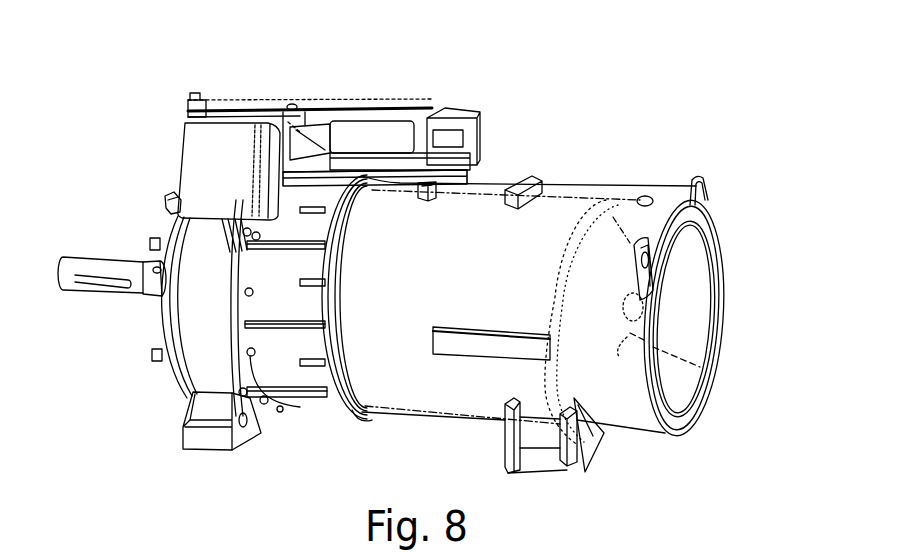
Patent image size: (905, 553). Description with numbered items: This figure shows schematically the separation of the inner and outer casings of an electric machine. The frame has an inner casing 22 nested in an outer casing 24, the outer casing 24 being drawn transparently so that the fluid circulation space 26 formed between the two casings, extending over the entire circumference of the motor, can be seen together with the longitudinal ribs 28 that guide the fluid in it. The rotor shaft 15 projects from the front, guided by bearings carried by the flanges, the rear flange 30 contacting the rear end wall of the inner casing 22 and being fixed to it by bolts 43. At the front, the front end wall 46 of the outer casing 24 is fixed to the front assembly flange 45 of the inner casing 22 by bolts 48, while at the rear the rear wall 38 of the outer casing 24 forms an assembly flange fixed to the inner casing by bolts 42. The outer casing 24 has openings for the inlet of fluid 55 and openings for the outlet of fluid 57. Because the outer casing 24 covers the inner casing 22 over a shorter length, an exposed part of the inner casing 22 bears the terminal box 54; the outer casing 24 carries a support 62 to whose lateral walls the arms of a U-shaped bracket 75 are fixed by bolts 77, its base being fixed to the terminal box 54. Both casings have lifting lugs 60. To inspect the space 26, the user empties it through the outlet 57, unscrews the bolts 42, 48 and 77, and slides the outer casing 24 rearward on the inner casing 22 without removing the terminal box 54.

The shaft 15 is at (80, 289).
The inner casing 22 is at (310, 397).
The outer casing 24 is at (668, 202).
The fluid circulation space 26 is at (230, 353).
The longitudinal ribs 28 is at (300, 407).
The rear flange 30 is at (715, 372).
The rear wall 38 is at (723, 292).
The bolts 42 is at (598, 407).
The bolts 43 is at (573, 403).
The front assembly flange 45 is at (227, 305).
The front end wall 46 is at (368, 421).
The bolts 48 is at (233, 377).
The terminal box 54 is at (455, 113).
The openings for the inlet of fluid 55 is at (645, 196).
The openings for the outlet of fluid 57 is at (650, 427).
The lifting lugs 60 is at (220, 237).
The support 62 is at (540, 184).
The U-shaped bracket 75 is at (440, 184).
The bolts 77 is at (470, 177).